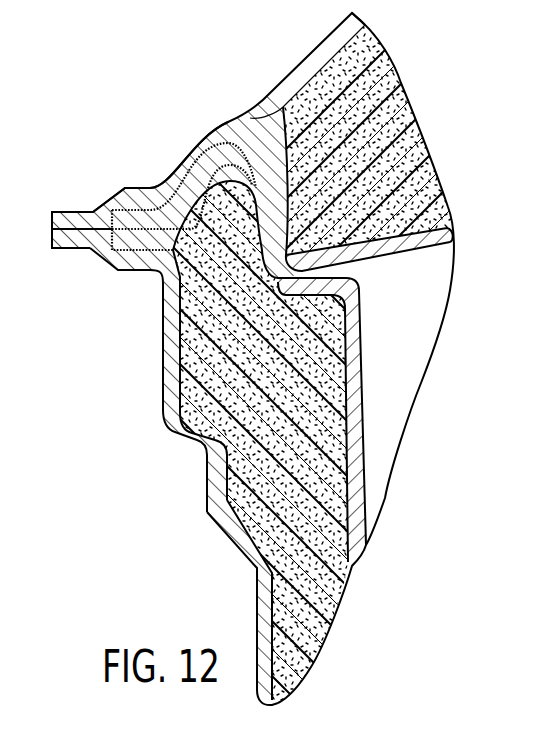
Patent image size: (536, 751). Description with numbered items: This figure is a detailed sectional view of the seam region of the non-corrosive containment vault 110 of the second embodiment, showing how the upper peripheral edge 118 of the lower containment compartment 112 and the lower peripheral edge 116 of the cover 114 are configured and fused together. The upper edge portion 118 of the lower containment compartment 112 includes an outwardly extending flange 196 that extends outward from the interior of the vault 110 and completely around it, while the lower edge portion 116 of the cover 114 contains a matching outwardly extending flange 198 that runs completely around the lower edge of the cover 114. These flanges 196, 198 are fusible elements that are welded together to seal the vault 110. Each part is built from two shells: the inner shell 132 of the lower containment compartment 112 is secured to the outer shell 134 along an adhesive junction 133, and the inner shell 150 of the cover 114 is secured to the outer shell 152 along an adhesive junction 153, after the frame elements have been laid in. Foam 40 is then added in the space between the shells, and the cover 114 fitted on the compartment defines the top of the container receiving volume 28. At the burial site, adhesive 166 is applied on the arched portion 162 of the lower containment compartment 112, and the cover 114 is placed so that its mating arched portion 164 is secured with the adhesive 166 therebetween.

The containment vault 110 is at (68, 77).
The lower containment compartment 112 is at (262, 610).
The cover 114 is at (327, 35).
The lower peripheral edge of the cover 116 is at (100, 208).
The upper peripheral edge of the lower containment compartment 118 is at (105, 258).
The inner shell of the lower containment compartment 132 is at (360, 410).
The adhesive junction 133 is at (167, 283).
The outer shell of the lower containment compartment 134 is at (163, 393).
The inner shell of the cover 150 is at (277, 103).
The outer shell of the cover 152 is at (198, 152).
The adhesive junction 153 is at (170, 203).
The arched portion 162 is at (192, 146).
The mating arched portion 164 is at (230, 147).
The adhesive 166 is at (250, 110).
The outwardly extending flange 196 is at (77, 252).
The outwardly extending flange 198 is at (68, 213).
The container receiving volume 28 is at (406, 337).
The foam 40 is at (395, 133).